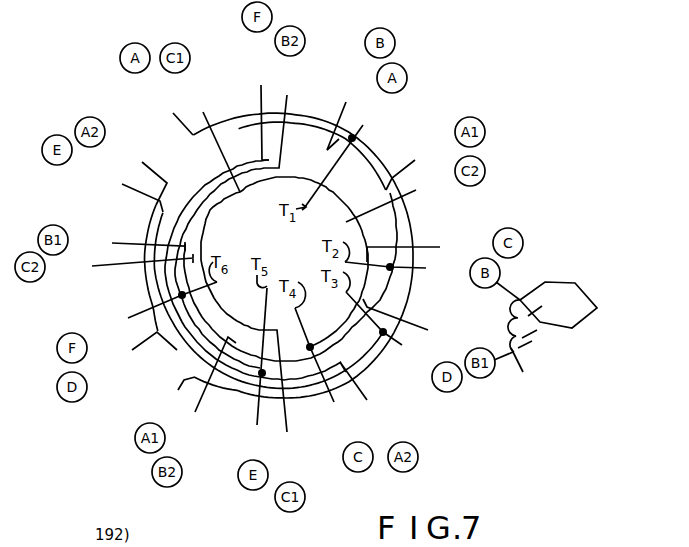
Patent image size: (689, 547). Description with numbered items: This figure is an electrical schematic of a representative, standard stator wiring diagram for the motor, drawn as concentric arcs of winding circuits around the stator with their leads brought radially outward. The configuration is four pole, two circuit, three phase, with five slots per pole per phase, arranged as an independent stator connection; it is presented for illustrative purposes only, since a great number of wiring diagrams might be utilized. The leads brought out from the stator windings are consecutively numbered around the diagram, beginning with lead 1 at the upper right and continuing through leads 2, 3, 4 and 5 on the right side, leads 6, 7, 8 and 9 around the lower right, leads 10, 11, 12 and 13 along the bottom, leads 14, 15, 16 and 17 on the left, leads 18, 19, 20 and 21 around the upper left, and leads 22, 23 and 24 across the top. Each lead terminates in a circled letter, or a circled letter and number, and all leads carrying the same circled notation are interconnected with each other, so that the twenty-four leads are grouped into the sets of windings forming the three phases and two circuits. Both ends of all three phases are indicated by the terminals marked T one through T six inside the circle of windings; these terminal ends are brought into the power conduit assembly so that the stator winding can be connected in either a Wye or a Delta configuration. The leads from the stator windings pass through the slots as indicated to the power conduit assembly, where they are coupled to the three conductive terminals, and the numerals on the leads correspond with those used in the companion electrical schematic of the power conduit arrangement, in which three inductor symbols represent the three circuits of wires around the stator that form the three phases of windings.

The stator winding lead 1 is at (383, 91).
The stator winding lead 2 is at (457, 140).
The stator winding lead 3 is at (456, 173).
The stator winding lead 4 is at (493, 244).
The stator winding lead 5 is at (470, 271).
The stator winding lead 6 is at (467, 357).
The stator winding lead 7 is at (435, 371).
The stator winding lead 8 is at (396, 444).
The stator winding lead 9 is at (351, 443).
The stator winding lead 10 is at (289, 482).
The stator winding lead 11 is at (254, 460).
The stator winding lead 12 is at (174, 458).
The stator winding lead 13 is at (159, 427).
The stator winding lead 14 is at (85, 380).
The stator winding lead 15 is at (86, 342).
The stator winding lead 16 is at (45, 267).
The stator winding lead 17 is at (68, 240).
The stator winding lead 18 is at (70, 157).
The stator winding lead 19 is at (102, 141).
The stator winding lead 20 is at (146, 69).
The stator winding lead 21 is at (180, 73).
The stator winding lead 22 is at (257, 32).
The stator winding lead 23 is at (289, 56).
The stator winding lead 24 is at (372, 56).